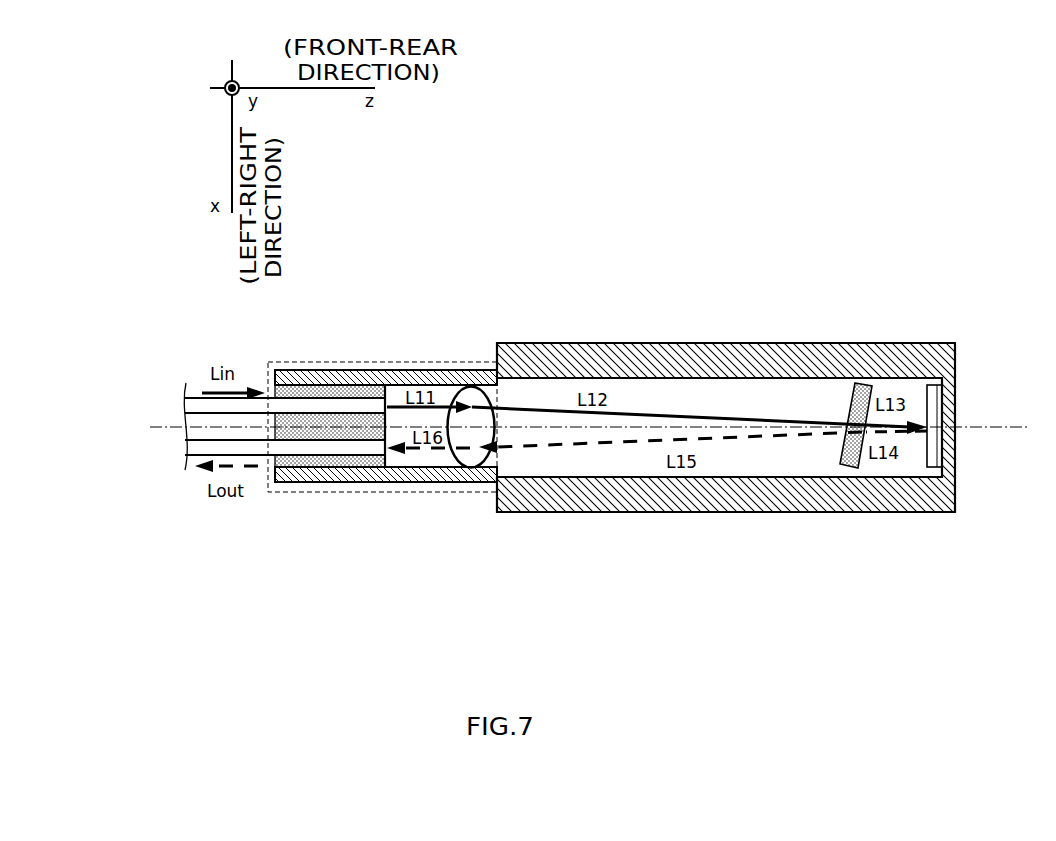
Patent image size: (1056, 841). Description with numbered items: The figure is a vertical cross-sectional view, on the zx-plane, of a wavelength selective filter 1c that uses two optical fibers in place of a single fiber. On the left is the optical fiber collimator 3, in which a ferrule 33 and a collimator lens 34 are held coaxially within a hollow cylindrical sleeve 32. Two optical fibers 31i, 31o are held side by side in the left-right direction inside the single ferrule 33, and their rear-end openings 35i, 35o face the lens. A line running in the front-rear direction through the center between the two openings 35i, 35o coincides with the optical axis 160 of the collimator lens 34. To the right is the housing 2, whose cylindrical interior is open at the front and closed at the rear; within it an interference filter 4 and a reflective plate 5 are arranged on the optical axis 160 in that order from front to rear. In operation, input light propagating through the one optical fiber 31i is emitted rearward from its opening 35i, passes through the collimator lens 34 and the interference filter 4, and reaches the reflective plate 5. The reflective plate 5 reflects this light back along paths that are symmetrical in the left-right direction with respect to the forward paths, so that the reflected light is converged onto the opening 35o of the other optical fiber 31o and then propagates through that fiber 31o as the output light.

The wavelength selective filter 1c is at (888, 252).
The housing 2 is at (812, 341).
The optical fiber collimator 3 is at (382, 494).
The interference filter 4 is at (848, 470).
The reflective plate 5 is at (950, 466).
The optical fiber 31i is at (293, 403).
The optical fiber 31o is at (290, 458).
The sleeve 32 is at (457, 484).
The ferrule 33 is at (357, 392).
The collimator lens 34 is at (458, 396).
The opening 35i is at (390, 400).
The opening 35o is at (398, 484).
The optical axis 160 is at (160, 432).